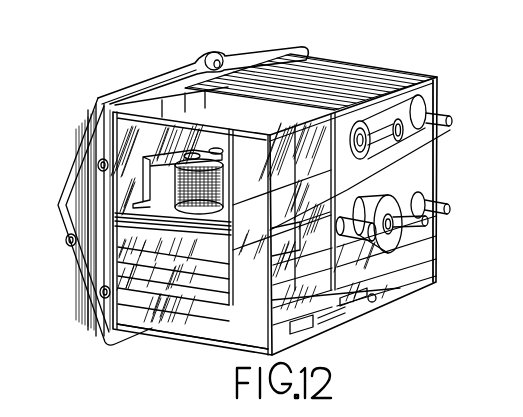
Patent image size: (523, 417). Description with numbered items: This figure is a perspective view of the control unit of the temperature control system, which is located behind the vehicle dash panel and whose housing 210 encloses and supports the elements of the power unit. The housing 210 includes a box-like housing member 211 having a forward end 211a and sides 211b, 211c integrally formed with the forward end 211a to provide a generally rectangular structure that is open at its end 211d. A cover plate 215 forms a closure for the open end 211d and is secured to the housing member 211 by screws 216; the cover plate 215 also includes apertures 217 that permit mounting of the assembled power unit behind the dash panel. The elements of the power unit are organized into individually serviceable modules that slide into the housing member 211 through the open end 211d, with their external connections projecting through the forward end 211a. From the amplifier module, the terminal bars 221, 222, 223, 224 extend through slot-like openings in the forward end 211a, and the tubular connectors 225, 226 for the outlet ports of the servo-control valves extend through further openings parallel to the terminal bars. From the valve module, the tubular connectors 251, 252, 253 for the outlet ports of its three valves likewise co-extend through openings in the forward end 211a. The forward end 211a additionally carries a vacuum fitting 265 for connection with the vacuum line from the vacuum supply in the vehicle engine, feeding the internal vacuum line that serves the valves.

The housing 210 is at (183, 196).
The box-like housing member 211 is at (280, 197).
The forward end 211a is at (465, 181).
The side 211b is at (328, 179).
The side 211c is at (192, 342).
The open end 211d is at (76, 220).
The cover plate 215 is at (57, 220).
The screws 216 is at (151, 177).
The apertures 217 is at (44, 247).
The terminal bar 221 is at (319, 333).
The terminal bar 222 is at (342, 324).
The terminal bar 223 is at (363, 308).
The terminal bar 224 is at (390, 307).
The tubular connector 225 is at (423, 224).
The tubular connector 226 is at (415, 216).
The tubular connector 251 is at (424, 127).
The tubular connector 252 is at (443, 130).
The tubular connector 253 is at (423, 137).
The vacuum fitting 265 is at (357, 288).